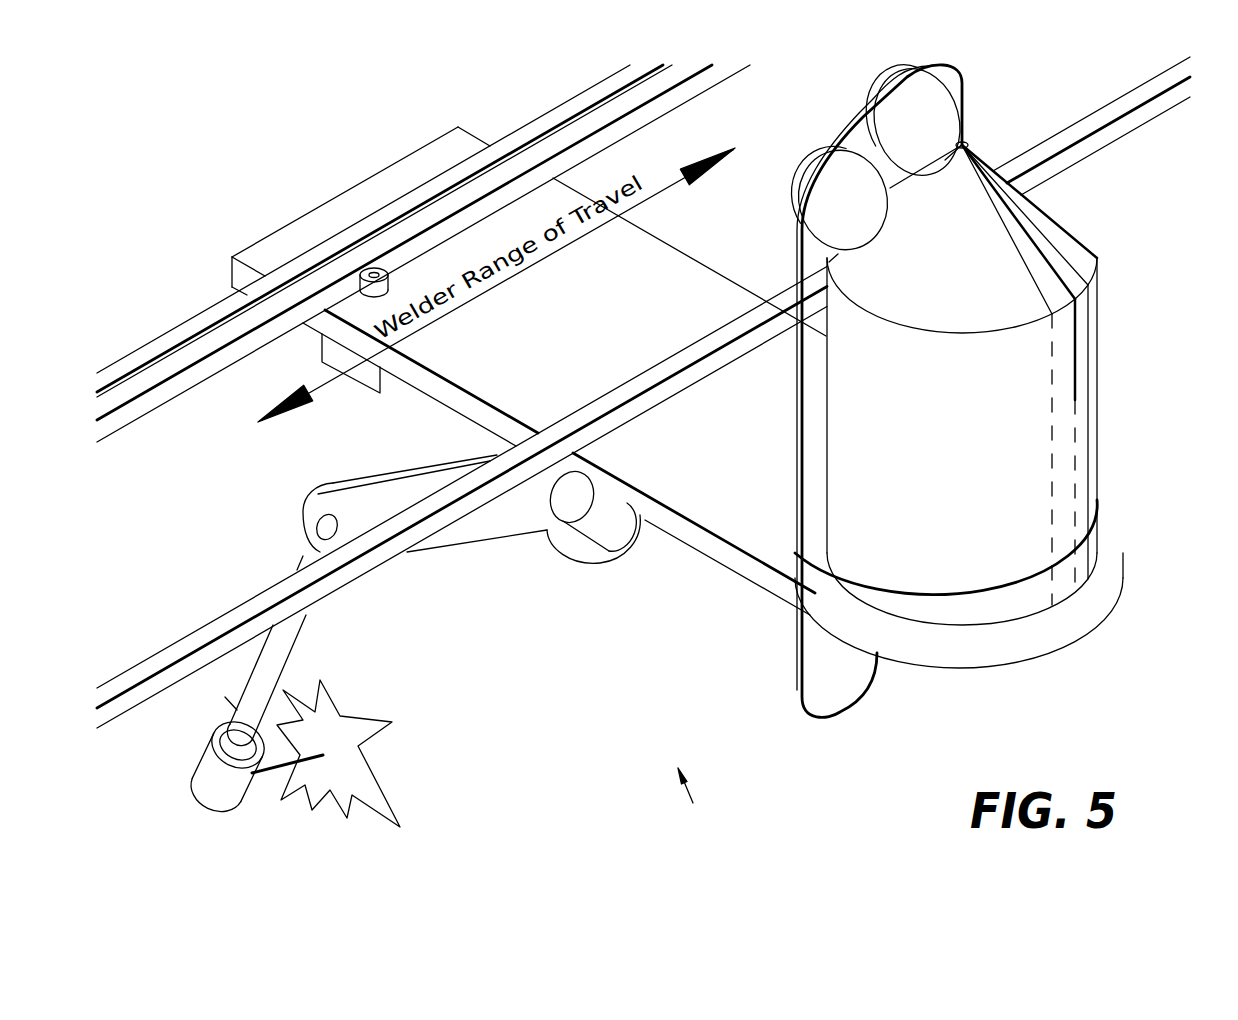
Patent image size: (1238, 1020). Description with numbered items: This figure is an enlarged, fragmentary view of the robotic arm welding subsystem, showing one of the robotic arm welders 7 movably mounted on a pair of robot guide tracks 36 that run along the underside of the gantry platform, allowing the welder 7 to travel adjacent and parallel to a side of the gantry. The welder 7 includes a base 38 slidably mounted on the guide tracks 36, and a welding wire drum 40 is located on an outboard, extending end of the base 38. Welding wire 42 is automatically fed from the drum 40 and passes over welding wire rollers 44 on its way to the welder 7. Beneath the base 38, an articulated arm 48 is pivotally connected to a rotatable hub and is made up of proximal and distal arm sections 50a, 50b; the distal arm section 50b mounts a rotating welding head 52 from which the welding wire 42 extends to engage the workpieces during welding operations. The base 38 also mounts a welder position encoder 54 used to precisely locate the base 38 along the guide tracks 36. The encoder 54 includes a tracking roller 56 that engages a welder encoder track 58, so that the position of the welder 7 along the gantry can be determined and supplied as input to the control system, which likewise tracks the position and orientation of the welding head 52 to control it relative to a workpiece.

The robot guide tracks 36 is at (197, 315).
The base 38 is at (730, 466).
The welding wire drum 40 is at (1088, 231).
The welding wire 42 is at (858, 121).
The welding wire rollers 44 is at (923, 144).
The articulated arm 48 is at (592, 558).
The proximal arm section 50a is at (457, 544).
The distal arm section 50b is at (297, 632).
The welding head 52 is at (198, 778).
The welder position encoder 54 is at (380, 394).
The tracking roller 56 is at (390, 281).
The welder encoder track 58 is at (247, 355).
The robotic arm welder 7 is at (692, 797).